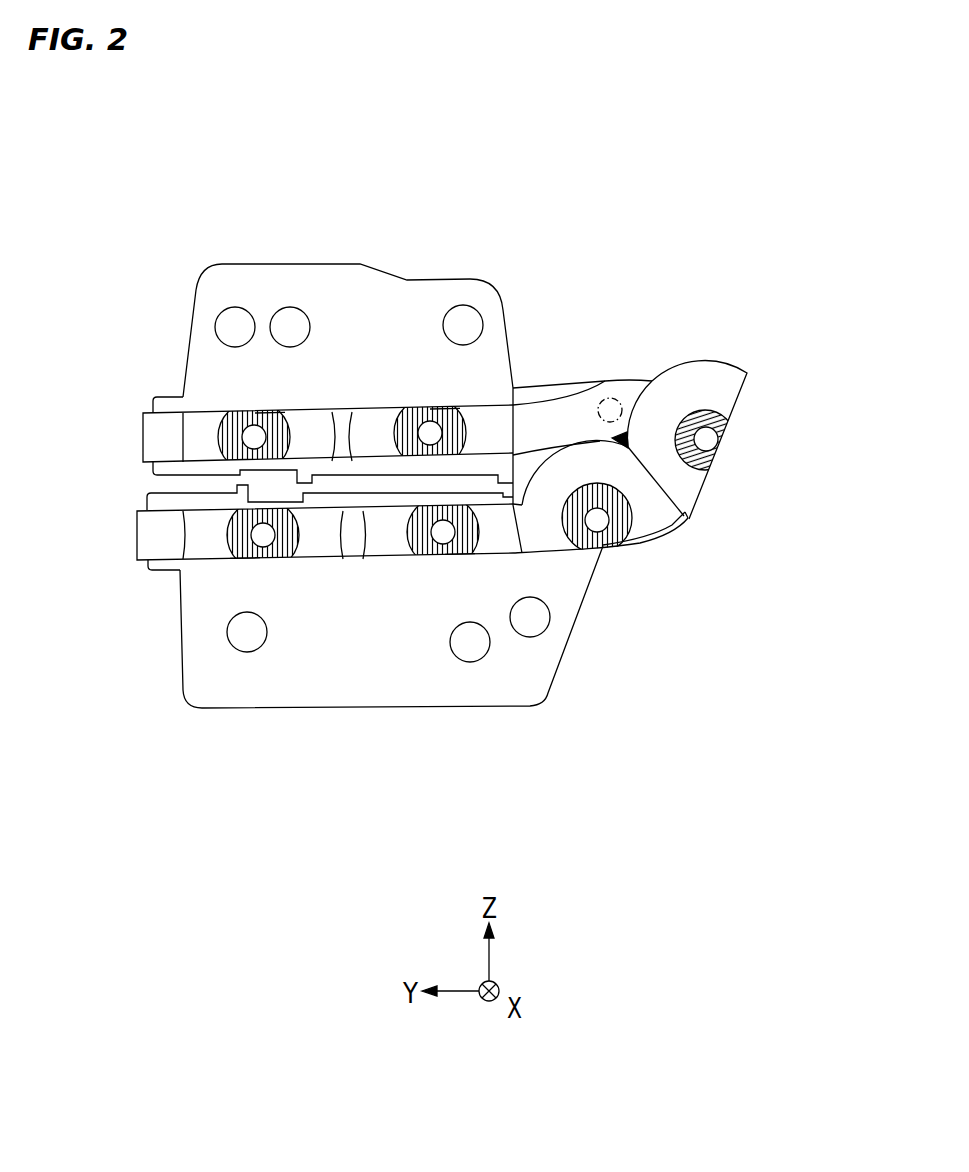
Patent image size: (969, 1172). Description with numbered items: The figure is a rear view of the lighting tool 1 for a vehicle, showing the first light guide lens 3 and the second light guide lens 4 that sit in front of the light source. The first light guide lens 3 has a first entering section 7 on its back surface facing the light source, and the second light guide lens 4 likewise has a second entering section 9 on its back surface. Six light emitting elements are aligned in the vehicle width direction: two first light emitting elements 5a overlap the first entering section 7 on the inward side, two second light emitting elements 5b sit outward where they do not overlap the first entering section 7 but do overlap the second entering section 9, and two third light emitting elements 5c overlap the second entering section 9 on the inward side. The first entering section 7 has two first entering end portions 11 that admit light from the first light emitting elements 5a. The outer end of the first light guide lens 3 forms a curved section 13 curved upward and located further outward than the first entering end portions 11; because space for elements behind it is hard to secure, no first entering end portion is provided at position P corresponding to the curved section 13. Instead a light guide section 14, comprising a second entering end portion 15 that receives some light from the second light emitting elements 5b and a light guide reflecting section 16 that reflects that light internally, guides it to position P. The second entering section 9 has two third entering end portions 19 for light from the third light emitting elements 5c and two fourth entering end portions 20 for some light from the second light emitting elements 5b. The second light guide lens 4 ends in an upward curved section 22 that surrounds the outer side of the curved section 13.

The lighting tool for a vehicle 1 is at (140, 228).
The first light guide lens 3 is at (133, 438).
The second light guide lens 4 is at (132, 535).
The first light emitting elements 5a is at (254, 437).
The second light emitting elements 5b is at (708, 442).
The third light emitting elements 5c is at (265, 537).
The first entering section 7 is at (203, 440).
The second entering section 9 is at (215, 550).
The first entering end portions 11 is at (270, 413).
The curved section 13 is at (593, 393).
The light guide section 14 is at (712, 268).
The second entering end portion 15 is at (673, 400).
The light guide reflecting section 16 is at (623, 390).
The third entering end portions 19 is at (245, 562).
The fourth entering end portions 20 is at (733, 430).
The curved section 22 is at (685, 535).
The position corresponding to the curved section P is at (613, 398).